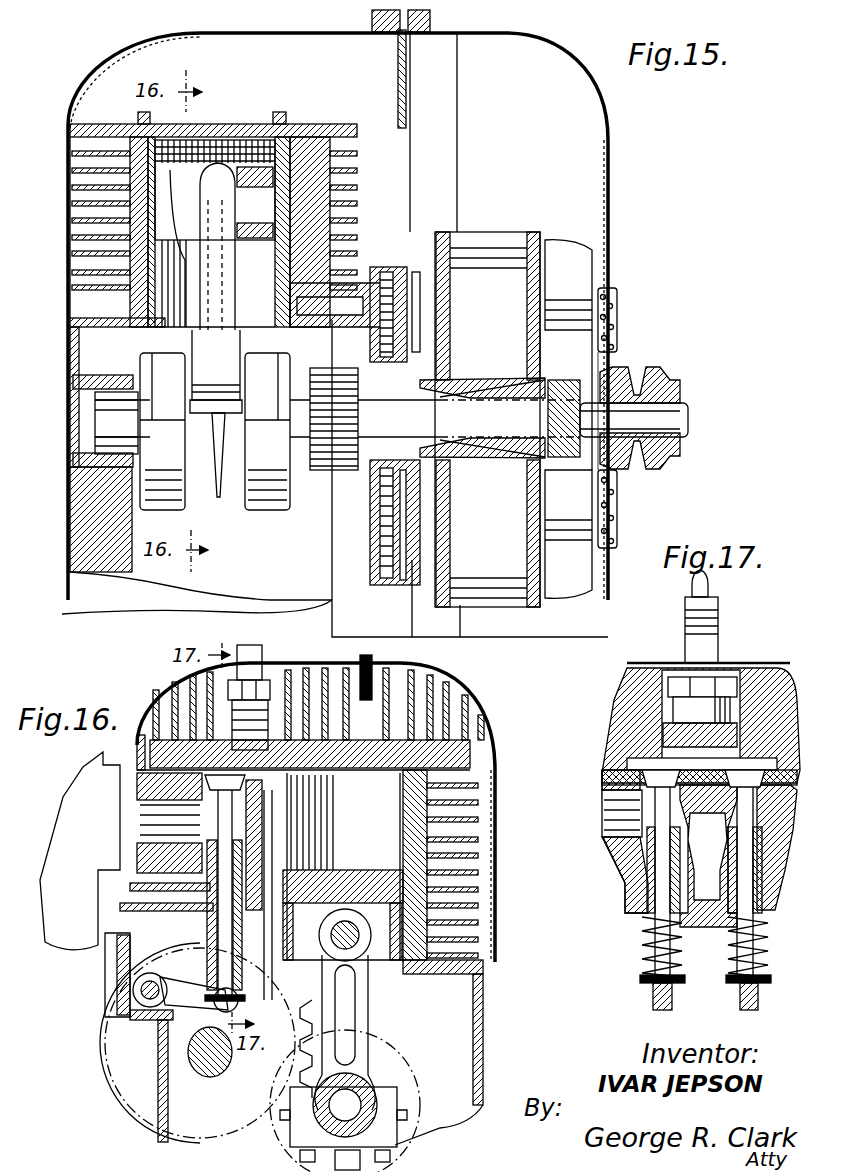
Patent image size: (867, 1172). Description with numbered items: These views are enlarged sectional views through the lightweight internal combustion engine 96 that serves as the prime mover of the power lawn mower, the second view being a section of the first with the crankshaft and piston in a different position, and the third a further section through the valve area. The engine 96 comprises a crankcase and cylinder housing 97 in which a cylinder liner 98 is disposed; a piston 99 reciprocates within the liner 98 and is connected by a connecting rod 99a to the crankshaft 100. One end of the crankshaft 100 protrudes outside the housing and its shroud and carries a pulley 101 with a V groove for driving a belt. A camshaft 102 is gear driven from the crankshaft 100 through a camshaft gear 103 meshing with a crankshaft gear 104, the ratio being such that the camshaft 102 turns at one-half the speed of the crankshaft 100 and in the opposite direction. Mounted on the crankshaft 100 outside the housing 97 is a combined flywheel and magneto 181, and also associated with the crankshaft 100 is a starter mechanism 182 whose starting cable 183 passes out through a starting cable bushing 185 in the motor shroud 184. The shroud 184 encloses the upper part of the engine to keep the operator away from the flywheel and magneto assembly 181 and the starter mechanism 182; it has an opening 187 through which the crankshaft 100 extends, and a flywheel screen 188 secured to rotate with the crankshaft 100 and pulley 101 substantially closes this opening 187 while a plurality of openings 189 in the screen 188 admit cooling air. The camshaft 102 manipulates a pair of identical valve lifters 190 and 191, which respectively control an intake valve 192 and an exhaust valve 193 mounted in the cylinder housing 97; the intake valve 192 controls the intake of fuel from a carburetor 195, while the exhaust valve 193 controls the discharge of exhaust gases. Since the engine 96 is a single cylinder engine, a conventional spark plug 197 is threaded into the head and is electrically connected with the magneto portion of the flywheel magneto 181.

In FIG. 15, the internal combustion engine 96 is at (648, 196).
In FIG. 16, the internal combustion engine 96 is at (97, 1006).
In FIG. 15, the crankcase and cylinder housing 97 is at (100, 168).
In FIG. 16, the crankcase and cylinder housing 97 is at (430, 780).
In FIG. 17, the crankcase and cylinder housing 97 is at (792, 690).
In FIG. 15, the cylinder liner 98 is at (247, 125).
In FIG. 16, the cylinder liner 98 is at (400, 800).
In FIG. 15, the piston 99 is at (167, 212).
In FIG. 16, the piston 99 is at (335, 882).
In FIG. 15, the connecting rod 99a is at (228, 470).
In FIG. 16, the connecting rod 99a is at (378, 988).
In FIG. 15, the crankshaft 100 is at (682, 420).
In FIG. 16, the crankshaft 100 is at (372, 1093).
In FIG. 15, the pulley 101 is at (645, 368).
In FIG. 16, the camshaft 102 is at (220, 1064).
In FIG. 16, the camshaft gear 103 is at (258, 1108).
In FIG. 15, the crankshaft gear 104 is at (322, 370).
In FIG. 16, the crankshaft gear 104 is at (378, 1040).
In FIG. 15, the combined flywheel and magneto 181 is at (474, 235).
In FIG. 15, the starter mechanism 182 is at (390, 266).
In FIG. 15, the starting cable 183 is at (398, 74).
In FIG. 15, the motor shroud 184 is at (554, 43).
In FIG. 16, the motor shroud 184 is at (455, 708).
In FIG. 15, the starting cable bushing 185 is at (372, 18).
In FIG. 15, the opening 187 is at (612, 289).
In FIG. 15, the flywheel screen 188 is at (618, 500).
In FIG. 15, the openings 189 is at (612, 301).
In FIG. 16, the valve lifter 190 is at (230, 1008).
In FIG. 17, the valve lifter 190 is at (740, 1004).
In FIG. 17, the valve lifter 191 is at (653, 1001).
In FIG. 16, the intake valve 192 is at (222, 816).
In FIG. 17, the intake valve 192 is at (745, 925).
In FIG. 17, the exhaust valve 193 is at (660, 890).
In FIG. 16, the carburetor 195 is at (90, 900).
In FIG. 16, the spark plug 197 is at (270, 676).
In FIG. 17, the spark plug 197 is at (720, 642).